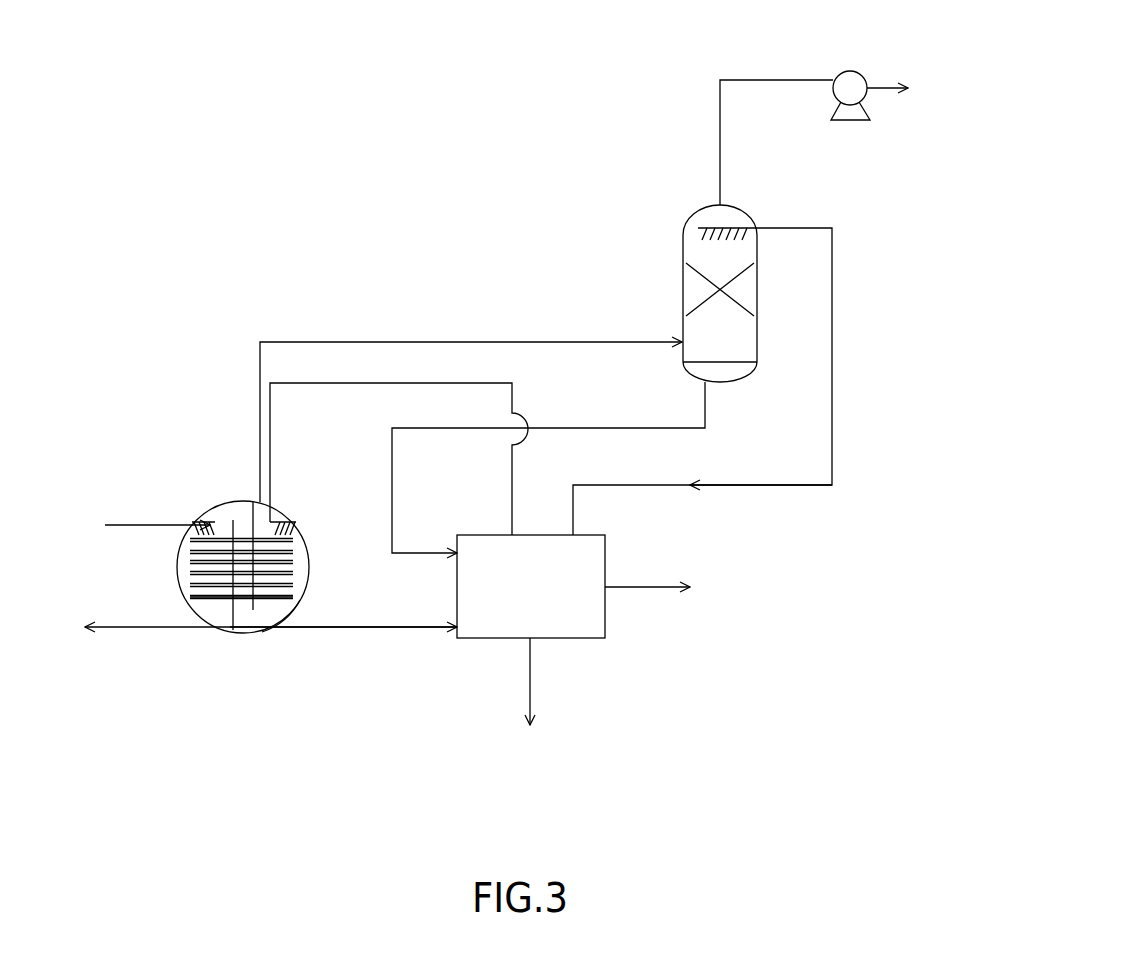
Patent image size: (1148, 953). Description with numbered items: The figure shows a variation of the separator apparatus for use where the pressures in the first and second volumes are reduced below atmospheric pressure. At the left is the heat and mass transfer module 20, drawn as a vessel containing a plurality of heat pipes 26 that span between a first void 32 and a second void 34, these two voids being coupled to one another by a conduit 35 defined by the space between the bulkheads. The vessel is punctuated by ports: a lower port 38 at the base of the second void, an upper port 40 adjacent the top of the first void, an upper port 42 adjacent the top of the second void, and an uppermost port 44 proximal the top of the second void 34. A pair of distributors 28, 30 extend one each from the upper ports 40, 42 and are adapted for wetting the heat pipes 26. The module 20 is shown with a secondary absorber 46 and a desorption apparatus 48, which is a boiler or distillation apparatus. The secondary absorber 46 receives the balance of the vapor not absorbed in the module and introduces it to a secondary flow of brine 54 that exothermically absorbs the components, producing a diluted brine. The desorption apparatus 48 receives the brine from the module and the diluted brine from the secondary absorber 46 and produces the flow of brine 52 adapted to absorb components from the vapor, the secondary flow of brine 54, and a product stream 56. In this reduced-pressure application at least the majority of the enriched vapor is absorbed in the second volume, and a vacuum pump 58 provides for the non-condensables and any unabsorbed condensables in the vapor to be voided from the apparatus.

The module 20 is at (297, 682).
The heat pipes 26 is at (232, 510).
The first distributor 28 is at (206, 507).
The second distributor 30 is at (300, 542).
The first void 32 is at (178, 566).
The second void 34 is at (302, 570).
The conduit 35 is at (243, 633).
The lower port 38 is at (275, 638).
The upper port 40 is at (170, 508).
The upper port 42 is at (202, 633).
The uppermost port 44 is at (252, 495).
The secondary absorber 46 is at (667, 238).
The desorption apparatus 48 is at (628, 650).
The flow of brine 52 is at (399, 440).
The secondary flow of brine 54 is at (702, 361).
The product stream 56 is at (647, 568).
The vacuum pump 58 is at (855, 58).